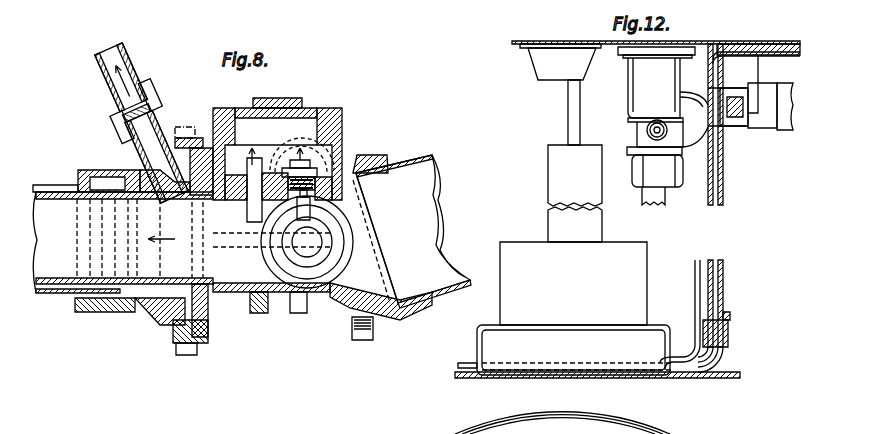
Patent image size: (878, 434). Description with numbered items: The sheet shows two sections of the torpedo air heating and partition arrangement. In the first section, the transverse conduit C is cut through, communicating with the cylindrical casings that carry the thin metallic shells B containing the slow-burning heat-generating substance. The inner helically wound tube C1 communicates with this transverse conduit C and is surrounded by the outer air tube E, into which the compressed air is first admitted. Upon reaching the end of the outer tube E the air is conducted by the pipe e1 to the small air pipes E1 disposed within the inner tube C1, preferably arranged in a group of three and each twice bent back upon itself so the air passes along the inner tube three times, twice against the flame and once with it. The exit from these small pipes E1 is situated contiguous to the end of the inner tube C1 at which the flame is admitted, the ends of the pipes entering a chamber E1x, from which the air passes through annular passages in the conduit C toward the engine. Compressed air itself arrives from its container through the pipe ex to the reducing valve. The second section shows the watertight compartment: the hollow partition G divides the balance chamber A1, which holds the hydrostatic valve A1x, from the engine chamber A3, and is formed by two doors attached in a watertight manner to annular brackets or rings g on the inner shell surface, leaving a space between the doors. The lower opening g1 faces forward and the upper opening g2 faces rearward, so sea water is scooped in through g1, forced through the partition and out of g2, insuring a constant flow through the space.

In FIG. 8, the air tube E is at (46, 192).
In FIG. 8, the small air pipes E1 is at (262, 140).
In FIG. 8, the chamber E1x is at (246, 130).
In FIG. 8, the pipe e1 is at (140, 76).
In FIG. 8, the thin metallic shells B is at (433, 290).
In FIG. 8, the transverse conduit C is at (315, 258).
In FIG. 8, the inner helically wound tube C1 is at (78, 290).
In FIG. 12, the hydrostatic valve A1x is at (573, 184).
In FIG. 12, the balance chamber A1 is at (569, 331).
In FIG. 12, the base plate A3 is at (614, 322).
In FIG. 12, the pipe ex is at (660, 193).
In FIG. 12, the hollow partition G is at (723, 308).
In FIG. 12, the annular brackets or rings g is at (707, 337).
In FIG. 12, the lower opening g1 is at (699, 374).
In FIG. 12, the upper opening g2 is at (738, 44).